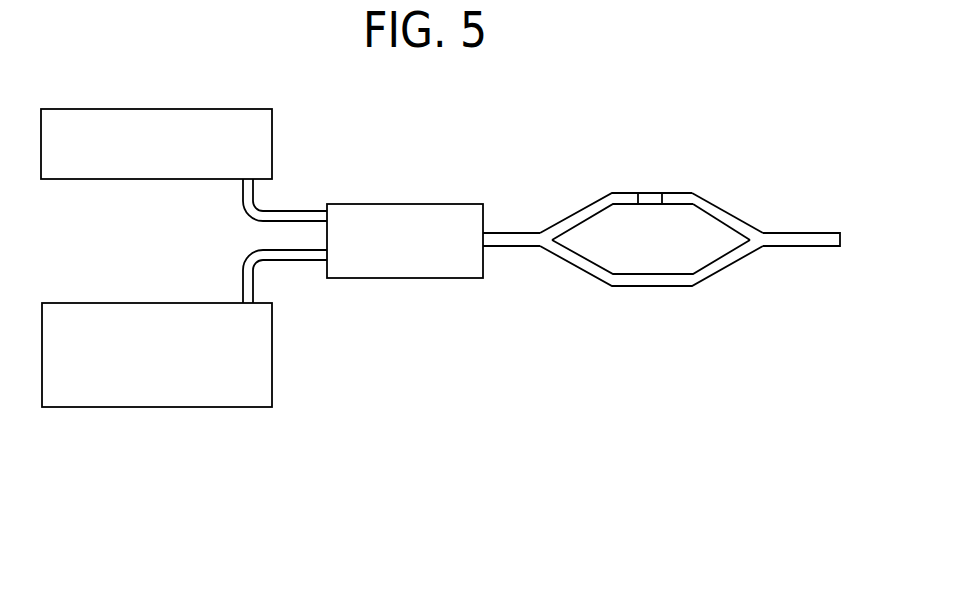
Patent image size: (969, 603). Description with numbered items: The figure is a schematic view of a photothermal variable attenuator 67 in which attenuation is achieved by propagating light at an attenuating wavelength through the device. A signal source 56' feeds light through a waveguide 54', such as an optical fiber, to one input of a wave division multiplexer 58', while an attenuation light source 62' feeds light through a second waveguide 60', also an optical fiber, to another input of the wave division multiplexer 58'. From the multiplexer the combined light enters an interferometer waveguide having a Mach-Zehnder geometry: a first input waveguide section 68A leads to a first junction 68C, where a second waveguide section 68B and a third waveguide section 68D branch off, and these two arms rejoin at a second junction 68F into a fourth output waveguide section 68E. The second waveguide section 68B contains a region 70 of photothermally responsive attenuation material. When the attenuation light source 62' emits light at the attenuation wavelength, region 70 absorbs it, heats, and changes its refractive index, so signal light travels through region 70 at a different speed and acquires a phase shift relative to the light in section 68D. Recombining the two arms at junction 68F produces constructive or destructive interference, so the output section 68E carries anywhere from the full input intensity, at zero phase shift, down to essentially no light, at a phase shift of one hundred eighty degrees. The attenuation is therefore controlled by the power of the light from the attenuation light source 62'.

The signal source 56' is at (156, 114).
The waveguide 54' is at (298, 192).
The wave division multiplexer 58' is at (405, 210).
The waveguide 60' is at (240, 276).
The attenuation light source 62' is at (157, 387).
The variable attenuator 67 is at (656, 281).
The first input waveguide section 68A is at (512, 247).
The second waveguide section 68B is at (589, 204).
The first junction 68C is at (542, 247).
The third waveguide section 68D is at (655, 287).
The fourth output waveguide section 68E is at (800, 247).
The second junction 68F is at (760, 229).
The region 70 is at (651, 193).